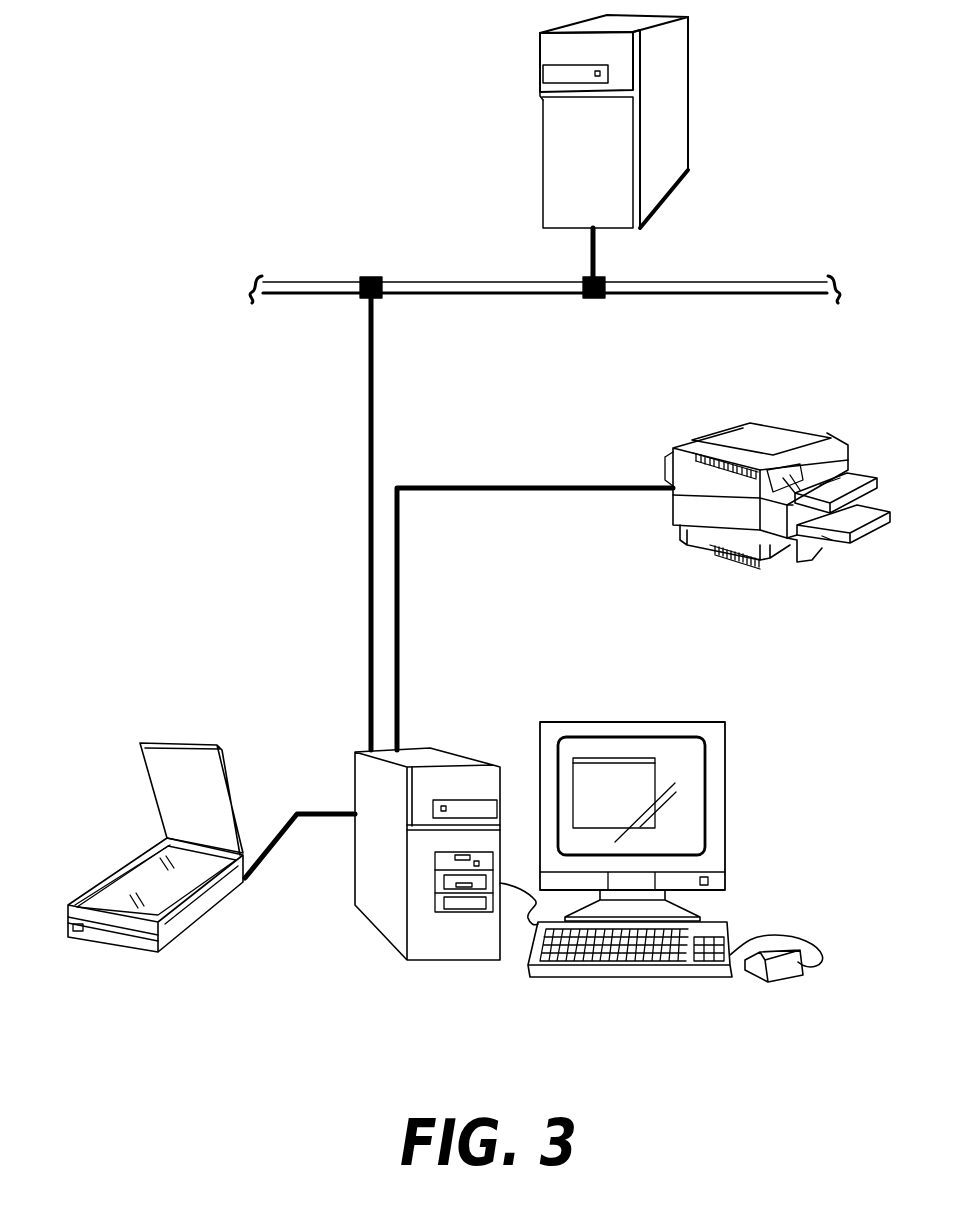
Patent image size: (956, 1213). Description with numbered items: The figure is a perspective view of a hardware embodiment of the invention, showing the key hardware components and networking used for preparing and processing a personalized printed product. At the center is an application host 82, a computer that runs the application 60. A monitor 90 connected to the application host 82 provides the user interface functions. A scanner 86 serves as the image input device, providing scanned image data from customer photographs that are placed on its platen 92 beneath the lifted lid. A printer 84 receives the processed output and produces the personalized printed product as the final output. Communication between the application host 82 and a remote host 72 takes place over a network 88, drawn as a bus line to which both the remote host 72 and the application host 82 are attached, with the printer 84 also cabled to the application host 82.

The application 60 is at (612, 778).
The remote host 72 is at (540, 180).
The application host 82 is at (460, 945).
The printer 84 is at (742, 432).
The scanner 86 is at (176, 871).
The network 88 is at (755, 282).
The monitor 90 is at (650, 784).
The platen 92 is at (150, 876).